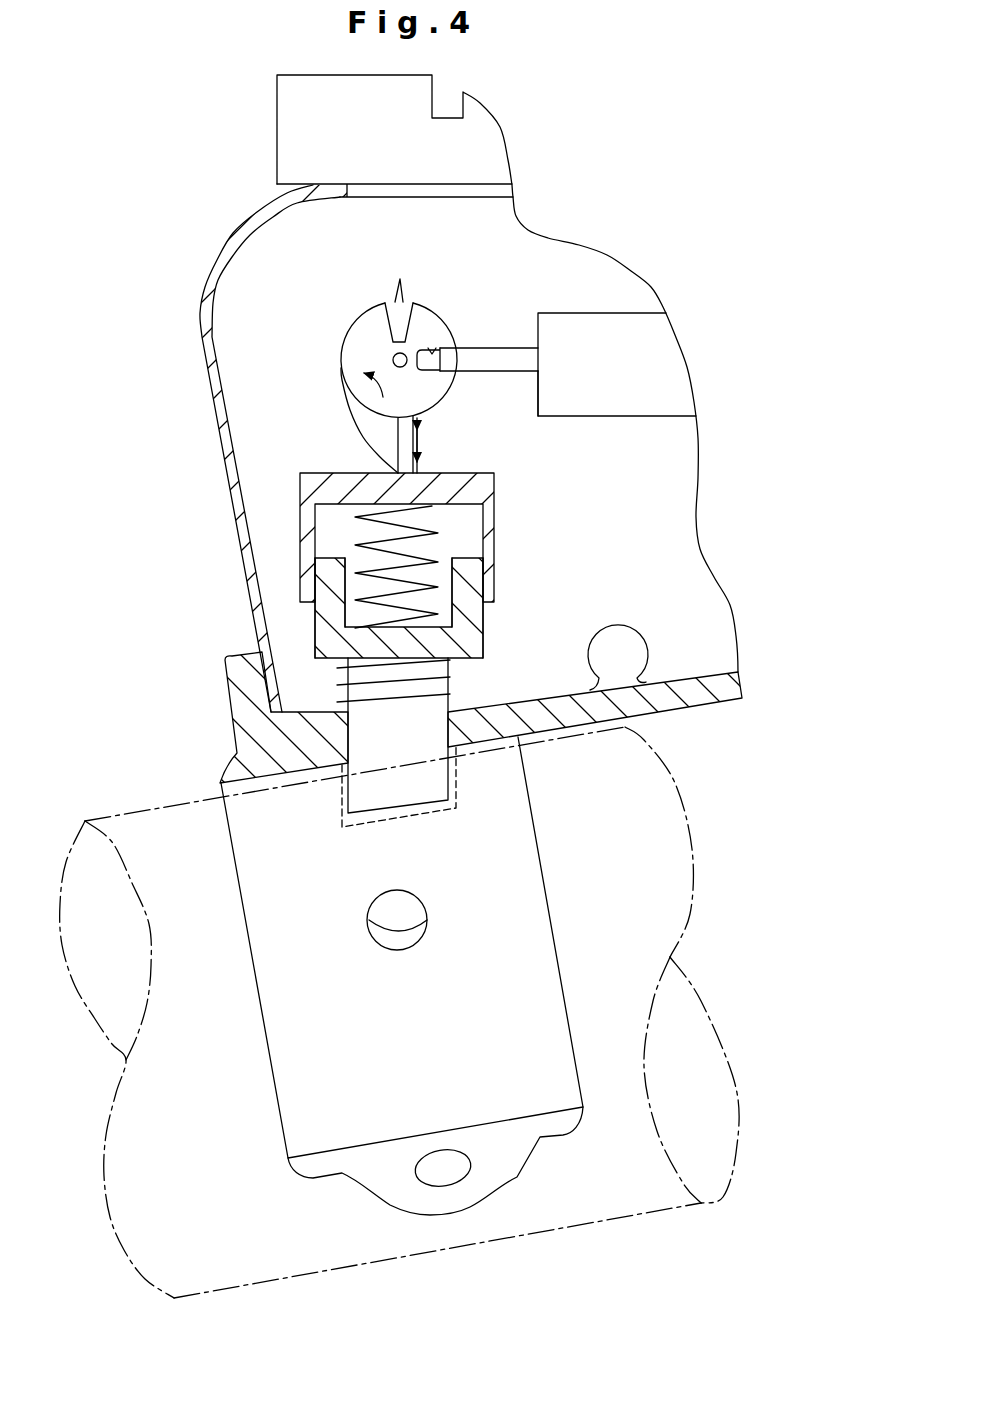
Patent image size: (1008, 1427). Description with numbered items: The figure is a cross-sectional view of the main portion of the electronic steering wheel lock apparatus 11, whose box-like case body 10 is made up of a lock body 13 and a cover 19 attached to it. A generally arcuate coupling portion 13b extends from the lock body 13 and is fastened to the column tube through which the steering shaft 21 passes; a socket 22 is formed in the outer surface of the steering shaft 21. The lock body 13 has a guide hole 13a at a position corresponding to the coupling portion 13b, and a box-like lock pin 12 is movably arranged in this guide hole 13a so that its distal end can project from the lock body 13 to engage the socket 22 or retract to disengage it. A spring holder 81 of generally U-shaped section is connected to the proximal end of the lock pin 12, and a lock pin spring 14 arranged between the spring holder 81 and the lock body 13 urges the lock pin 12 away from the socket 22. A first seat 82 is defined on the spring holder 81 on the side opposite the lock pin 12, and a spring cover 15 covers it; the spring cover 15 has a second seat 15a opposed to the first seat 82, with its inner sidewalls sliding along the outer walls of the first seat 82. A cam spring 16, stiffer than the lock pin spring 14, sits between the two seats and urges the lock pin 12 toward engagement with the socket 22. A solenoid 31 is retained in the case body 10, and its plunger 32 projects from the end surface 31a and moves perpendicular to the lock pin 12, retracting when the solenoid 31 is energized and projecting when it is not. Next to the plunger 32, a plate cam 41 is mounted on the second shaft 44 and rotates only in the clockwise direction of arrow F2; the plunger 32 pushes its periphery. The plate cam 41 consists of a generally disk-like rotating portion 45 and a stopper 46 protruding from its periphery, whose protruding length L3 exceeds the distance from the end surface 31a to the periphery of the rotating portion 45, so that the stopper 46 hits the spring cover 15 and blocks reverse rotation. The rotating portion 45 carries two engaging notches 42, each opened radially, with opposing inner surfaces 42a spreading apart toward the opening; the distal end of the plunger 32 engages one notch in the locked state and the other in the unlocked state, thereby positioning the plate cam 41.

The electronic steering wheel lock apparatus 11 is at (190, 207).
The cover 19 is at (203, 362).
The case body 10 is at (233, 478).
The plate cam 41 is at (358, 322).
The engaging notch 42 is at (402, 323).
The inner surface 42a is at (400, 271).
The second shaft 44 is at (393, 360).
The arrow F2 is at (356, 387).
The stopper 46 is at (353, 422).
The protruding length L3 is at (420, 447).
The rotating portion 45 is at (440, 393).
The plunger 32 is at (500, 357).
The solenoid 31 is at (613, 408).
The end surface 31a is at (538, 398).
The spring cover 15 is at (497, 508).
The second seat 15a is at (483, 545).
The cam spring 16 is at (440, 582).
The spring holder 81 is at (483, 628).
The first seat 82 is at (318, 615).
The guide hole 13a is at (350, 738).
The lock pin spring 14 is at (455, 683).
The lock body 13 is at (705, 700).
The lock pin 12 is at (413, 803).
The coupling portion 13b is at (541, 885).
The socket 22 is at (358, 825).
The steering shaft 21 is at (530, 1237).